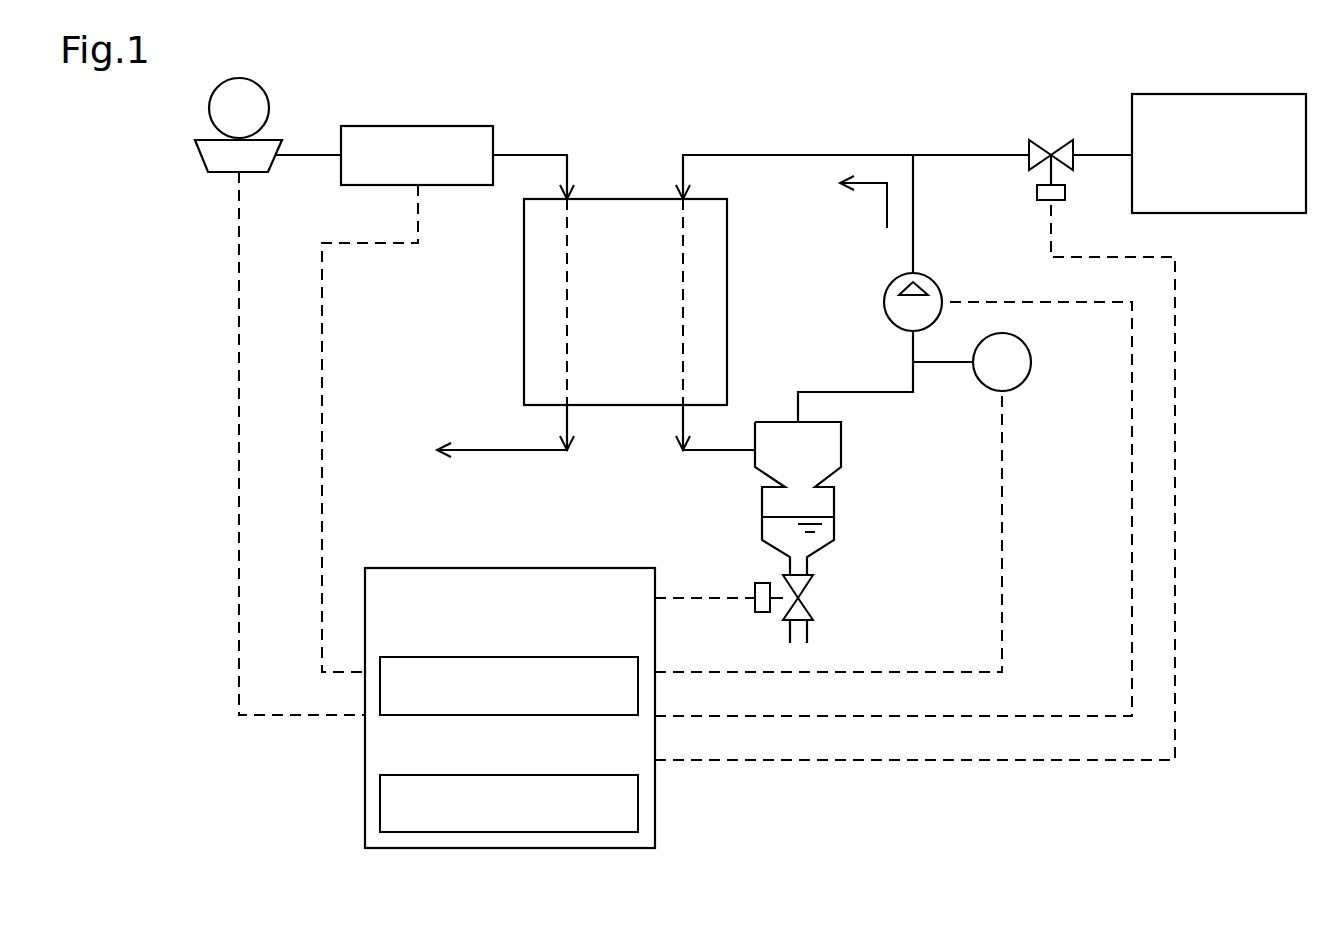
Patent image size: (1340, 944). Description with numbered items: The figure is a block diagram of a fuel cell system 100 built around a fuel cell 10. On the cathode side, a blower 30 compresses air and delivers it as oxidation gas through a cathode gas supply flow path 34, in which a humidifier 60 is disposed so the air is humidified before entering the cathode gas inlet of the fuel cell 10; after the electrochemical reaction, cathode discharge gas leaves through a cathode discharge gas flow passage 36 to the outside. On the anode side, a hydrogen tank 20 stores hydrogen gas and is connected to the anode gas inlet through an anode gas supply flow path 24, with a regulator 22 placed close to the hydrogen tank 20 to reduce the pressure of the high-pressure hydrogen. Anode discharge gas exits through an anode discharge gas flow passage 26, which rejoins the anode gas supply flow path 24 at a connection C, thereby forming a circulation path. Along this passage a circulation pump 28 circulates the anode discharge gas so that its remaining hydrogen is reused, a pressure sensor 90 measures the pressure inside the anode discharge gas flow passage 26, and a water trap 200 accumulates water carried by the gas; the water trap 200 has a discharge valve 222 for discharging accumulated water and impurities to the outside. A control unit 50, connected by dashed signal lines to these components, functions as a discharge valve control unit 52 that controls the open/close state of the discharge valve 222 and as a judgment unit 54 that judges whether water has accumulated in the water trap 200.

The fuel cell 10 is at (627, 199).
The hydrogen tank 20 is at (1235, 94).
The regulator 22 is at (1073, 148).
The anode gas supply flow path 24 is at (970, 155).
The anode discharge gas flow passage 26 is at (710, 450).
The circulation pump 28 is at (937, 282).
The blower 30 is at (239, 78).
The cathode gas supply flow path 34 is at (523, 155).
The cathode discharge gas flow passage 36 is at (540, 450).
The control unit 50 is at (408, 568).
The discharge valve control unit 52 is at (438, 657).
The judgment unit 54 is at (438, 775).
The humidifier 60 is at (437, 126).
The pressure sensor 90 is at (1031, 362).
The fuel cell system 100 is at (1207, 785).
The water trap 200 is at (904, 540).
The discharge valve 222 is at (813, 598).
The connection C is at (913, 155).